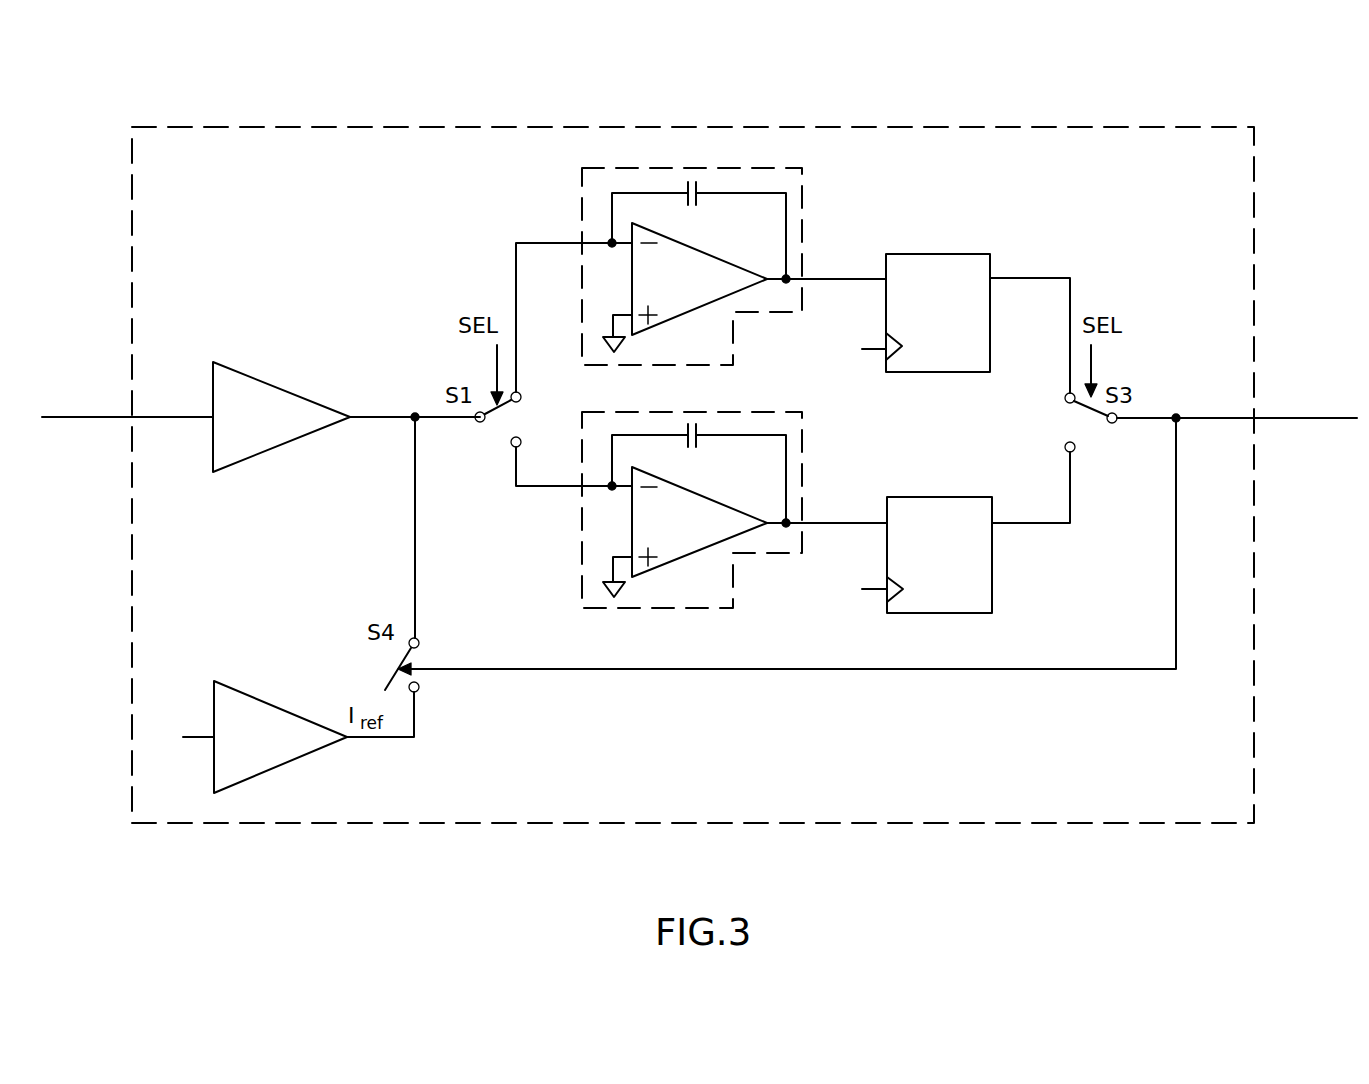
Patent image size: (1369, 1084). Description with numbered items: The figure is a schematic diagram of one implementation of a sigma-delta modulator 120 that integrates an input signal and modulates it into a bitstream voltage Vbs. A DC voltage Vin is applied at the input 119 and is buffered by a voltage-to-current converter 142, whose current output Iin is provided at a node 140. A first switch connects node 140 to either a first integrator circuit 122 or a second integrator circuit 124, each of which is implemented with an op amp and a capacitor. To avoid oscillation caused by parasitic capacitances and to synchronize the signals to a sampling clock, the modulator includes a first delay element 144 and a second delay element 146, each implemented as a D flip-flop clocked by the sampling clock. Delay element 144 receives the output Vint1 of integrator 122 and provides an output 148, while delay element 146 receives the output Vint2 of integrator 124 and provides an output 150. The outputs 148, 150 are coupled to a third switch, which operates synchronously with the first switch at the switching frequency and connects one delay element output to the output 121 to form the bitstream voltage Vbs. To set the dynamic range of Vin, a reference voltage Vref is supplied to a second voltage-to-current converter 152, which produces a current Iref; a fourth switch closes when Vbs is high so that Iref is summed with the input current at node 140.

The sigma-delta modulator 120 is at (252, 127).
The input 119 is at (110, 417).
The voltage-to-current converter 142 is at (288, 443).
The node 140 is at (418, 420).
The first integrator circuit 122 is at (802, 190).
The second integrator circuit 124 is at (802, 437).
The first delay element 144 is at (938, 372).
The second delay element 146 is at (938, 613).
The output of first delay element 148 is at (1018, 278).
The output of second delay element 150 is at (1027, 523).
The output 121 is at (1228, 418).
The voltage-to-current converter 152 is at (295, 688).